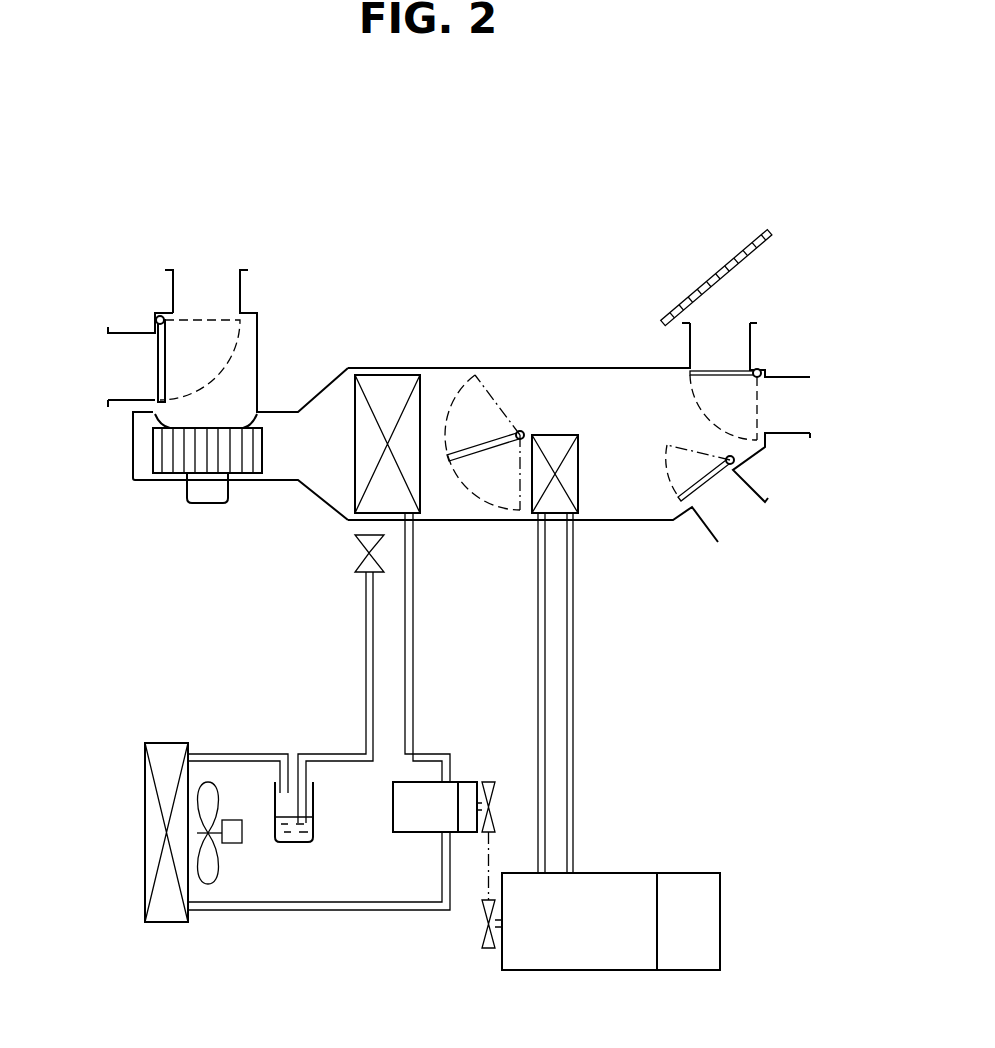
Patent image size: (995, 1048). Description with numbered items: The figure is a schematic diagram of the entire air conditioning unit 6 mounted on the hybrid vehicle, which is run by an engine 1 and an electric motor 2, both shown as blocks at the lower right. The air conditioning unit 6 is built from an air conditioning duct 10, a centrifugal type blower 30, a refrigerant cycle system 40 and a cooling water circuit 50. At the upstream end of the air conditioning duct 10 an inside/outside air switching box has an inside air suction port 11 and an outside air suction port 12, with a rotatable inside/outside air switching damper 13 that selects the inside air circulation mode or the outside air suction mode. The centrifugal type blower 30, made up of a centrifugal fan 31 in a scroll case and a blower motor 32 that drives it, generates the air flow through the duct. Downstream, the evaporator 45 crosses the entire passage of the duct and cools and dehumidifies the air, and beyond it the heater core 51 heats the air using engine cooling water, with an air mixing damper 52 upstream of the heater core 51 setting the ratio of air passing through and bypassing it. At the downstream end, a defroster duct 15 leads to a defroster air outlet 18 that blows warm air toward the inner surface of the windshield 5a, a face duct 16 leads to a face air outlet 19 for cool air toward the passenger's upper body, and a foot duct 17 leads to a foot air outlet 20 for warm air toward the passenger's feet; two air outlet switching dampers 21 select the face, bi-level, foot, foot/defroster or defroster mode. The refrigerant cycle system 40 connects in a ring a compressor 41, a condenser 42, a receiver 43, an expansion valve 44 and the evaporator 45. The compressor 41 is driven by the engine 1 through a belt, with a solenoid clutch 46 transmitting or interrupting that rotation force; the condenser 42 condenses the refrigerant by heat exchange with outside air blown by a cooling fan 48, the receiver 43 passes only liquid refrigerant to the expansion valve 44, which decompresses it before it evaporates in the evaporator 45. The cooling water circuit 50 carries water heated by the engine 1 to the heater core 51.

The engine 1 is at (580, 971).
The electric motor 2 is at (693, 971).
The windshield 5a is at (745, 250).
The air conditioning unit 6 is at (542, 252).
The air conditioning duct 10 is at (507, 368).
The inside air suction port 11 is at (120, 357).
The outside air suction port 12 is at (203, 275).
The inside/outside air switching damper 13 is at (157, 380).
The defroster duct 15 is at (690, 345).
The face duct 16 is at (787, 436).
The foot duct 17 is at (762, 500).
The defroster air outlet 18 is at (717, 333).
The face air outlet 19 is at (795, 404).
The foot air outlet 20 is at (727, 515).
The air outlet switching dampers 21 is at (725, 372).
The centrifugal type blower 30 is at (172, 514).
The centrifugal fan 31 is at (158, 458).
The blower motor 32 is at (203, 503).
The refrigerant cycle system 40 is at (244, 735).
The compressor 41 is at (417, 833).
The condenser 42 is at (163, 923).
The receiver 43 is at (294, 843).
The expansion valve 44 is at (357, 548).
The evaporator 45 is at (378, 375).
The solenoid clutch 46 is at (463, 782).
The cooling fan 48 is at (211, 884).
The cooling water circuit 50 is at (578, 739).
The heater core 51 is at (578, 480).
The air mixing damper 52 is at (478, 456).